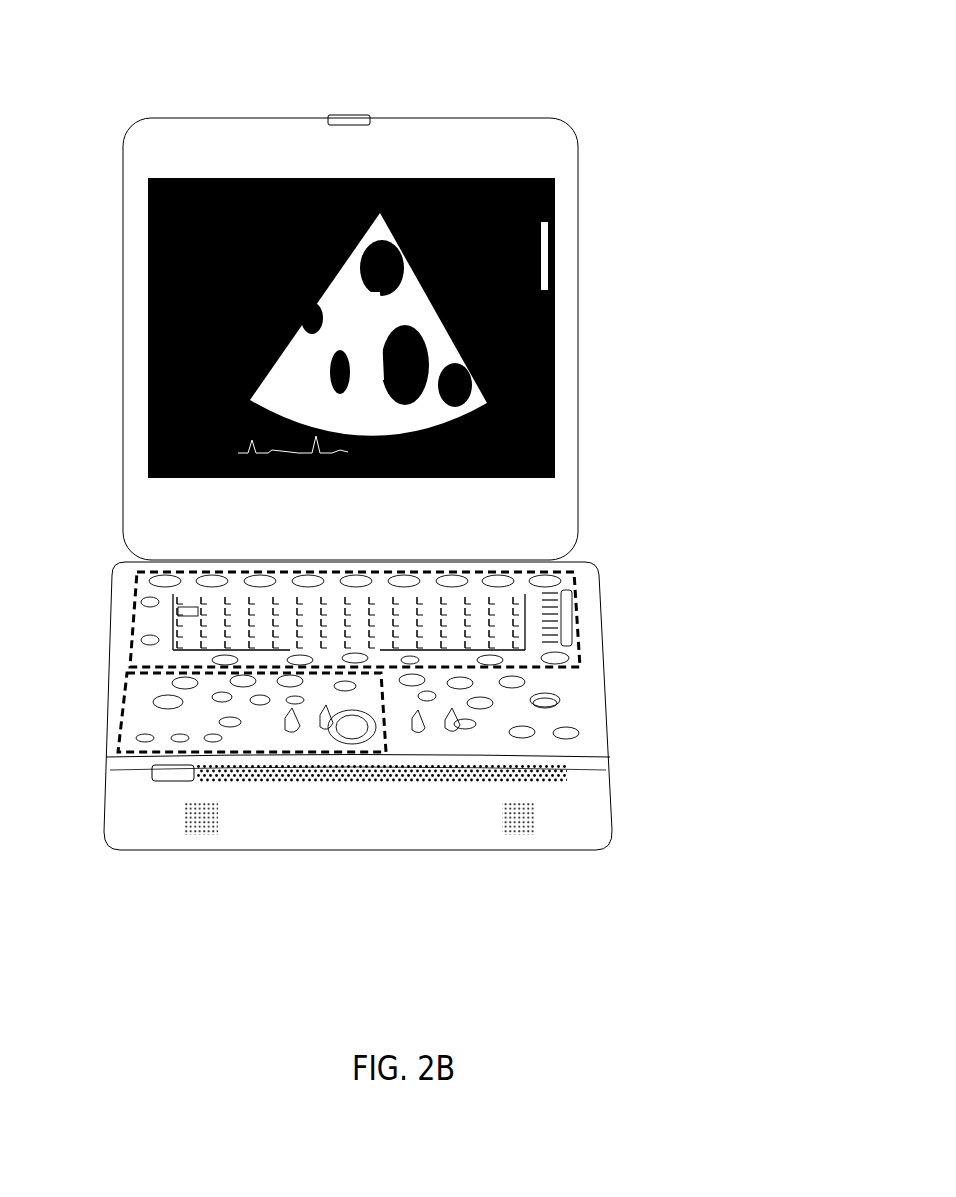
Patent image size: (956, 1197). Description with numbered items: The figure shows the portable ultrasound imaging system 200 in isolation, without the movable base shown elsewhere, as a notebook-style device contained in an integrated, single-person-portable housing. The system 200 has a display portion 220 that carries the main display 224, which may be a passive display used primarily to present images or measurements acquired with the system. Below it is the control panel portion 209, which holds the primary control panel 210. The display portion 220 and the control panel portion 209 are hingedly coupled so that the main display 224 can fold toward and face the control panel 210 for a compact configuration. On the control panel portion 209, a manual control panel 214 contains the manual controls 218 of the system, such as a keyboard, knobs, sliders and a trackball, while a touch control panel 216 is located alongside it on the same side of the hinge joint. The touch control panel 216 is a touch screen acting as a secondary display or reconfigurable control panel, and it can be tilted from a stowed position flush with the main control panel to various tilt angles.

The portable ultrasound imaging system 200 is at (672, 30).
The control panel portion 209 is at (613, 785).
The primary control panel 210 is at (583, 682).
The manual control panel 214 is at (573, 582).
The touch control panel 216 is at (123, 717).
The manual controls 218 is at (180, 612).
The display portion 220 is at (573, 153).
The main display 224 is at (553, 267).